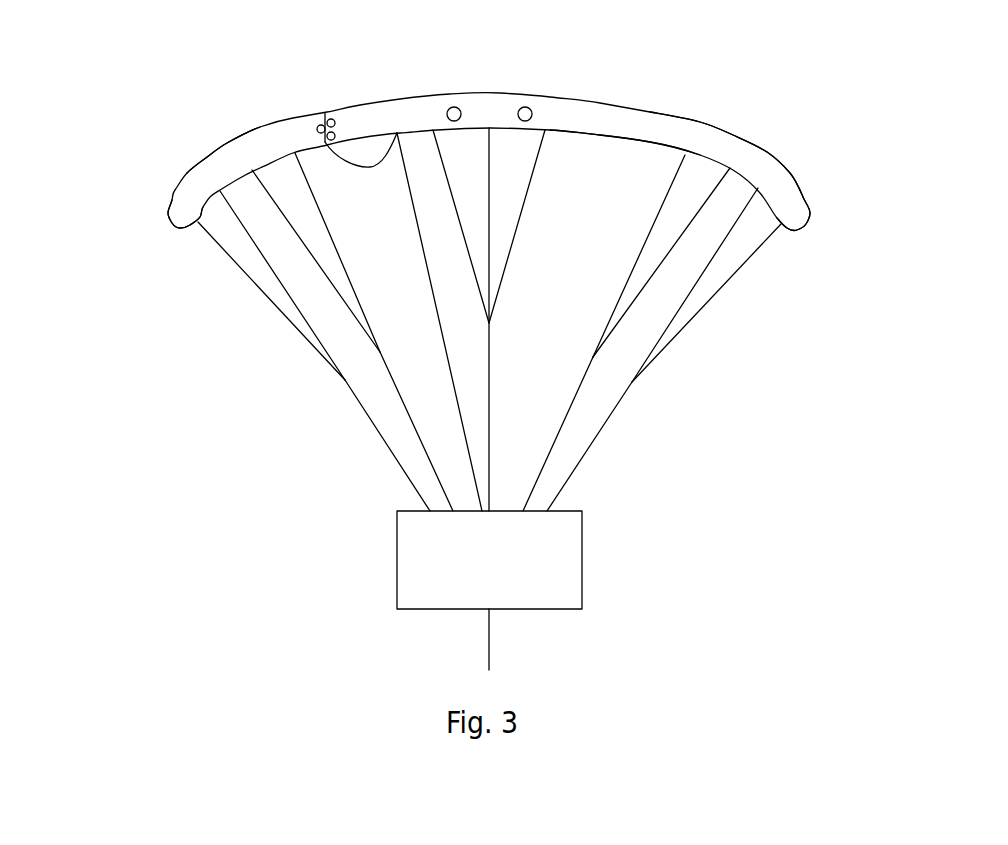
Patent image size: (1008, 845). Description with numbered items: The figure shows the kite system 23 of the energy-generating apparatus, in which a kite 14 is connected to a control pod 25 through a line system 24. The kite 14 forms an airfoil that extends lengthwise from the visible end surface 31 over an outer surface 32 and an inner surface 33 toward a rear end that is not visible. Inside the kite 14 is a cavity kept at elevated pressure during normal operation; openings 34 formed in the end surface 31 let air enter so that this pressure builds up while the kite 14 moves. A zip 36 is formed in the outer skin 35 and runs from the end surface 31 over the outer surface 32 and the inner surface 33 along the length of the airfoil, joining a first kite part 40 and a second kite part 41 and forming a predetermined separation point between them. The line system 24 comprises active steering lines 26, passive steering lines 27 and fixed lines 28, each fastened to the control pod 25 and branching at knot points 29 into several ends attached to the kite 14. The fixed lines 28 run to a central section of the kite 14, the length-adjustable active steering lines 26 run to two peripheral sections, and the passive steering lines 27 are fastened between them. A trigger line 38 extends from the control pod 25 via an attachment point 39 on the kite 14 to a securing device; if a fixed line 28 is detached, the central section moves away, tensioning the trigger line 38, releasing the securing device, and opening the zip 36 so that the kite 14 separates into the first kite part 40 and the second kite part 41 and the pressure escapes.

The kite 14 is at (628, 92).
The kite system 23 is at (164, 418).
The line system 24 is at (727, 332).
The control pod 25 is at (583, 557).
The active steering lines 26 is at (386, 446).
The passive steering lines 27 is at (410, 413).
The fixed lines 28 is at (490, 443).
The knot points 29 is at (345, 381).
The end surface 31 is at (217, 168).
The outer surface 32 is at (697, 122).
The inner surface 33 is at (617, 140).
The openings 34 is at (454, 107).
The outer skin 35 is at (777, 160).
The zip 36 is at (325, 113).
The trigger line 38 is at (423, 248).
The attachment point 39 is at (396, 133).
The first kite part 40 is at (170, 200).
The second kite part 41 is at (811, 200).